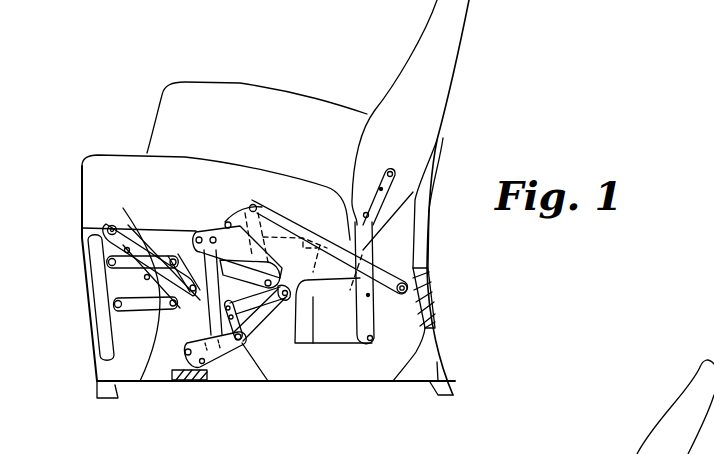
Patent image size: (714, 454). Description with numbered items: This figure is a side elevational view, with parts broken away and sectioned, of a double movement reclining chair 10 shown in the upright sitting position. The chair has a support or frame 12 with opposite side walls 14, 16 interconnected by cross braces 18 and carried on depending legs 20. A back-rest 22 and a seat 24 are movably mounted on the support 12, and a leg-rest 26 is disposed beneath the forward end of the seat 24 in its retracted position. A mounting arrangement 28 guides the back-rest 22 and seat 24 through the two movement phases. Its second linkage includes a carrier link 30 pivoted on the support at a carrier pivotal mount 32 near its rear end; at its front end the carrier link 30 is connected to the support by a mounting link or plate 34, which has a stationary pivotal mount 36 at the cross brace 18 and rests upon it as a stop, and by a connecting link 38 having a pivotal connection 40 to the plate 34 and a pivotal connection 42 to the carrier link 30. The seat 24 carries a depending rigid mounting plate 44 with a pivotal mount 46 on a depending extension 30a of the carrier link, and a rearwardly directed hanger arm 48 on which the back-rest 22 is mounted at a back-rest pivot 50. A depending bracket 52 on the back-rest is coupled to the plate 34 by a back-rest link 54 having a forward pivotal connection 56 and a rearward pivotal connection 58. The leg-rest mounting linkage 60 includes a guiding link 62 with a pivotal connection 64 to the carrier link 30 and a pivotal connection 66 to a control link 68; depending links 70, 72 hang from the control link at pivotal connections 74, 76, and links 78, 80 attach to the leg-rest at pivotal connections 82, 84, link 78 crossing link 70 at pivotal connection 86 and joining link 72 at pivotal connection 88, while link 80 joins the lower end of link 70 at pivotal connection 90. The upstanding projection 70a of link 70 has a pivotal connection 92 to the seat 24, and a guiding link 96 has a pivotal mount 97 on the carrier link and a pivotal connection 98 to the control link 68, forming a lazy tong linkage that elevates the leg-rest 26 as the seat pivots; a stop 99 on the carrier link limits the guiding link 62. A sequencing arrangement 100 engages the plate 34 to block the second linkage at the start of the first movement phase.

The reclining chair 10 is at (474, 168).
The support or frame 12 is at (433, 305).
The side wall 14 is at (262, 73).
The side wall 16 is at (437, 357).
The cross brace 18 is at (200, 382).
The leg 20 is at (99, 392).
The back-rest 22 is at (450, 78).
The seat 24 is at (206, 153).
The leg-rest 26 is at (100, 322).
The mounting arrangement 28 is at (333, 373).
The carrier link 30 is at (288, 232).
The depending extension of the carrier link 30a is at (306, 321).
The carrier pivotal mount 32 is at (407, 290).
The mounting link or plate 34 is at (227, 355).
The stationary pivotal mount 36 is at (178, 382).
The connecting link 38 is at (200, 337).
The pivotal connection 40 is at (218, 380).
The pivotal connection 42 is at (238, 228).
The mounting plate 44 is at (313, 297).
The pivotal mount 46 is at (295, 346).
The hanger arm 48 is at (348, 233).
The back-rest pivot 50 is at (367, 210).
The depending bracket 52 is at (378, 245).
The back-rest link 54 is at (346, 340).
The pivotal connection 56 is at (241, 342).
The pivotal connection 58 is at (412, 345).
The leg-rest mounting linkage 60 is at (50, 322).
The guiding link 62 is at (250, 263).
The pivotal connection 64 is at (257, 209).
The pivotal connection 66 is at (273, 338).
The control link 68 is at (135, 223).
The depending link 70 is at (160, 300).
The upwardly directed integral projection 70a is at (100, 228).
The depending link 72 is at (172, 252).
The pivotal connection 74 is at (100, 236).
The pivotal connection 76 is at (166, 226).
The link 78 is at (176, 279).
The link 80 is at (119, 292).
The pivotal connection 82 is at (107, 260).
The pivotal connection 84 is at (125, 322).
The pivotal connection 86 is at (125, 297).
The pivotal connection 88 is at (201, 292).
The pivotal connection 90 is at (147, 381).
The pivotal connection 92 is at (108, 238).
The guiding link 96 is at (213, 236).
The pivotal mount 97 is at (226, 221).
The pivotal connection 98 is at (222, 296).
The stop 99 is at (268, 190).
The sequencing arrangement 100 is at (272, 333).